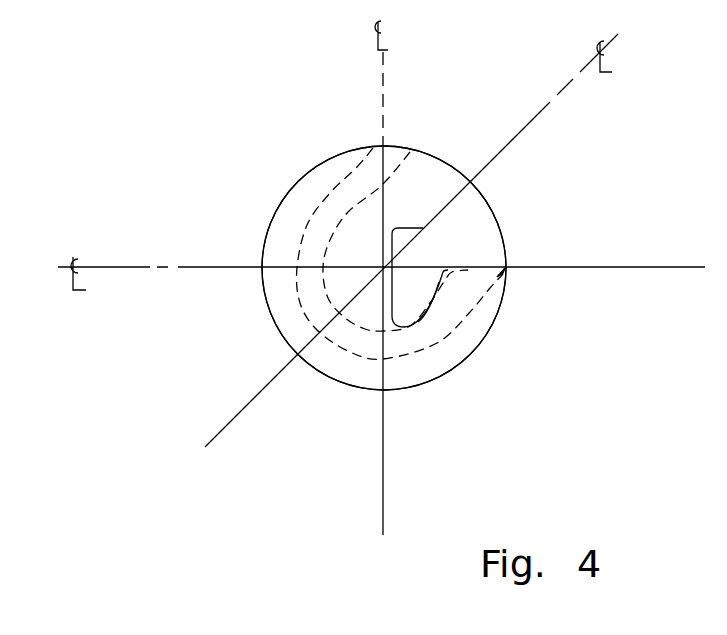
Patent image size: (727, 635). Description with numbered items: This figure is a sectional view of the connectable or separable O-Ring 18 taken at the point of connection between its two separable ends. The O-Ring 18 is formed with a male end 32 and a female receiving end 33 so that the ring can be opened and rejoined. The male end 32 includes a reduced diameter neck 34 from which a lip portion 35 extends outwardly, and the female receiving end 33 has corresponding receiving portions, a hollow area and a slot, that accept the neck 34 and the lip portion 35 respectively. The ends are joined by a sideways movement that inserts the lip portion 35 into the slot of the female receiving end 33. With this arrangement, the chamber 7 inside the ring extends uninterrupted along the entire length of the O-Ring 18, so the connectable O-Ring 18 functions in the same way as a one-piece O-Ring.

The chamber 7 is at (400, 323).
The O-Ring 18 is at (350, 362).
The male end 32 is at (384, 390).
The female receiving end 33 is at (405, 301).
The reduced diameter neck 34 is at (420, 183).
The lip portion 35 is at (343, 200).